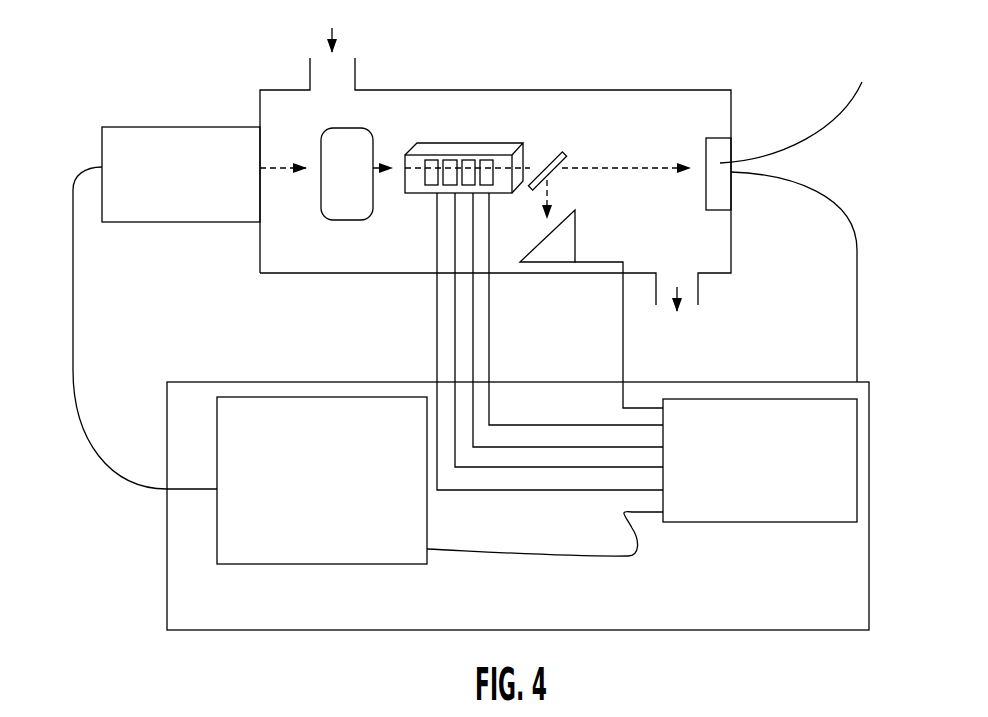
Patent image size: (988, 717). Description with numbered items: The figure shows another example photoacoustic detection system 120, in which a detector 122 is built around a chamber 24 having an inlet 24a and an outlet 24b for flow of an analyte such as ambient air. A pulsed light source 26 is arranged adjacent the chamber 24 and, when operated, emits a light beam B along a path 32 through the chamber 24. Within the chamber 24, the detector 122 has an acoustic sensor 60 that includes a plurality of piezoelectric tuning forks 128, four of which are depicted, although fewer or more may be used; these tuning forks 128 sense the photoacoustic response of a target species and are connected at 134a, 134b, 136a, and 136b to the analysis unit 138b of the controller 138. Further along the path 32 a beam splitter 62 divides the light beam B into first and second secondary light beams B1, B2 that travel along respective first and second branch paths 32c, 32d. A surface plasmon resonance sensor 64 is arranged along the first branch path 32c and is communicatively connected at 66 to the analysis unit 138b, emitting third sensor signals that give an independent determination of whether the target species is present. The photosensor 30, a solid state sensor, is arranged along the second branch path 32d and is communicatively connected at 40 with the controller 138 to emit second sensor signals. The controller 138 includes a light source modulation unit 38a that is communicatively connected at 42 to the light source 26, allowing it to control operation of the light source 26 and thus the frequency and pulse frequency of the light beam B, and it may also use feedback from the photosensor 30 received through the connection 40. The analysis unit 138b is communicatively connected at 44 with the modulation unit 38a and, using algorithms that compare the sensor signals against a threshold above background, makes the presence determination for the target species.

The chamber 24 is at (717, 273).
The inlet 24a is at (356, 62).
The outlet 24b is at (698, 295).
The pulsed light source 26 is at (121, 127).
The photosensor 30 is at (708, 138).
The path 32 is at (335, 165).
The first branch path 32c is at (550, 200).
The second branch path 32d is at (638, 170).
The light beam B is at (285, 190).
The first secondary light beam B1 is at (527, 206).
The second secondary light beam B2 is at (682, 158).
The acoustic sensor 60 is at (428, 143).
The piezoelectric tuning forks 128 is at (499, 156).
The beam splitter 62 is at (553, 152).
The surface plasmon resonance sensor 64 is at (575, 232).
The communicative connection 66 is at (623, 335).
The communicative connection 40 is at (858, 318).
The communicative connection 42 is at (72, 347).
The communicative connection 44 is at (522, 552).
The photoacoustic detection system 120 is at (98, 521).
The detector 122 is at (742, 216).
The connection 134a is at (489, 296).
The connection 134b is at (473, 330).
The connection 136a is at (455, 357).
The connection 136b is at (437, 405).
The controller 138 is at (869, 597).
The light source modulation unit 38a is at (217, 544).
The analysis unit 138b is at (857, 463).